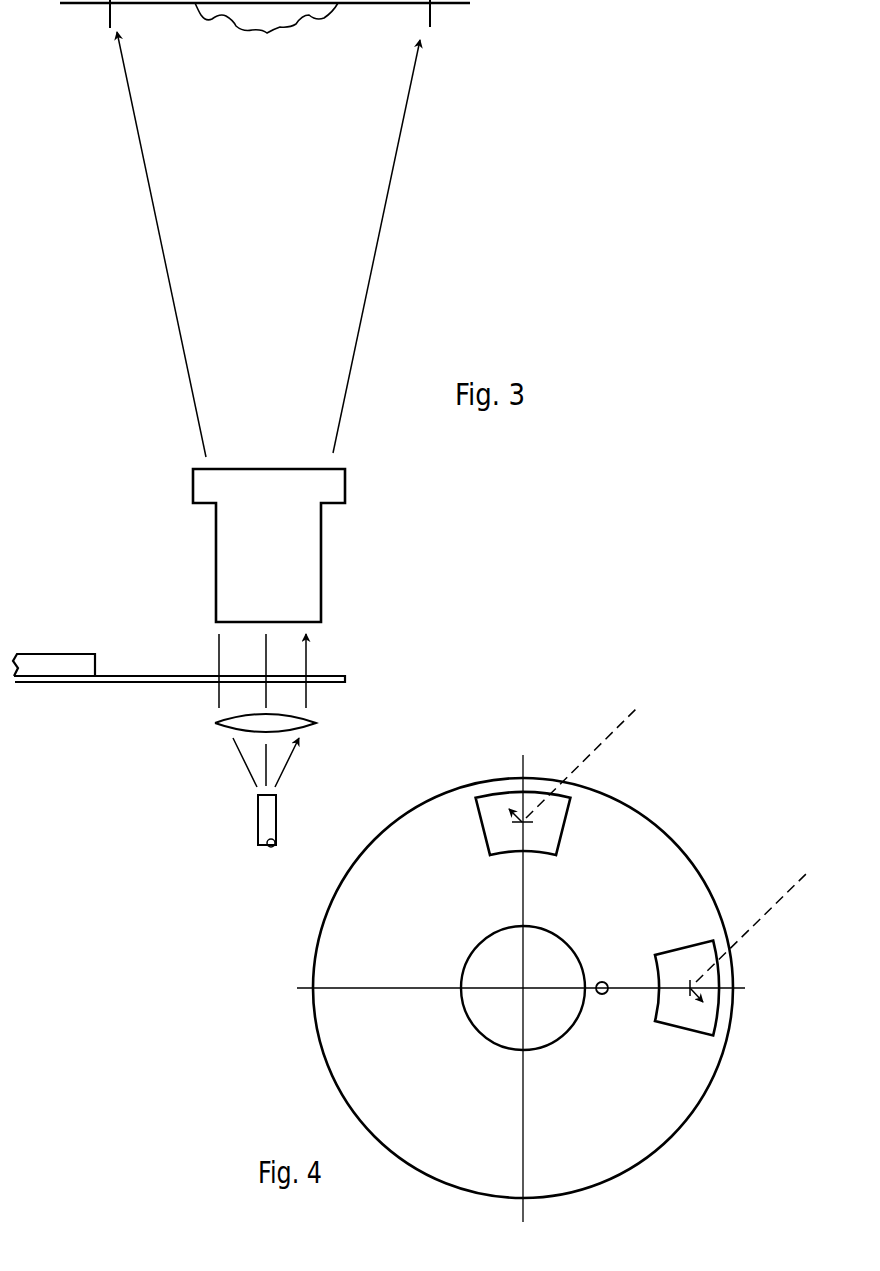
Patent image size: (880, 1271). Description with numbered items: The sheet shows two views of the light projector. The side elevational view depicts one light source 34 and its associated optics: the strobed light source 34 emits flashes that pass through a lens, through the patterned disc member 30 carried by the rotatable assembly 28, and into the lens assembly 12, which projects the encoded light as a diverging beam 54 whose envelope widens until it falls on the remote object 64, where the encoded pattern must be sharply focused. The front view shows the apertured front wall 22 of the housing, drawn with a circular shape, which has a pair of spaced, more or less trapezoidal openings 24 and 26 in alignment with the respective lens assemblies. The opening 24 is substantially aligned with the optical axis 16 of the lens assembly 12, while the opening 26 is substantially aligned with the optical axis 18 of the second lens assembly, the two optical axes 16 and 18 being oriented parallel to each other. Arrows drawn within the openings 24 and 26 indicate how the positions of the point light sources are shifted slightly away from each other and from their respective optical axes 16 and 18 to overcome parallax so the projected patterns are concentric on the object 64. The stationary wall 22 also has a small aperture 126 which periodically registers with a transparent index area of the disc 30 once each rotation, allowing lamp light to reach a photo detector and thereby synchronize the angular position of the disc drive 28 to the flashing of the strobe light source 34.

In FIG. 3, the lens assembly 12 is at (297, 563).
In FIG. 3, the rotatable assembly 28 is at (56, 663).
In FIG. 3, the patterned disc member 30 is at (332, 672).
In FIG. 3, the light source 34 is at (257, 820).
In FIG. 3, the light beam 54 is at (384, 232).
In FIG. 3, the remote object 64 is at (277, 31).
In FIG. 4, the optical axis 16 is at (600, 748).
In FIG. 4, the optical axis 18 is at (762, 918).
In FIG. 4, the apertured front wall 22 is at (372, 1073).
In FIG. 4, the opening 24 is at (552, 832).
In FIG. 4, the opening 26 is at (688, 1012).
In FIG. 4, the aperture 126 is at (632, 944).